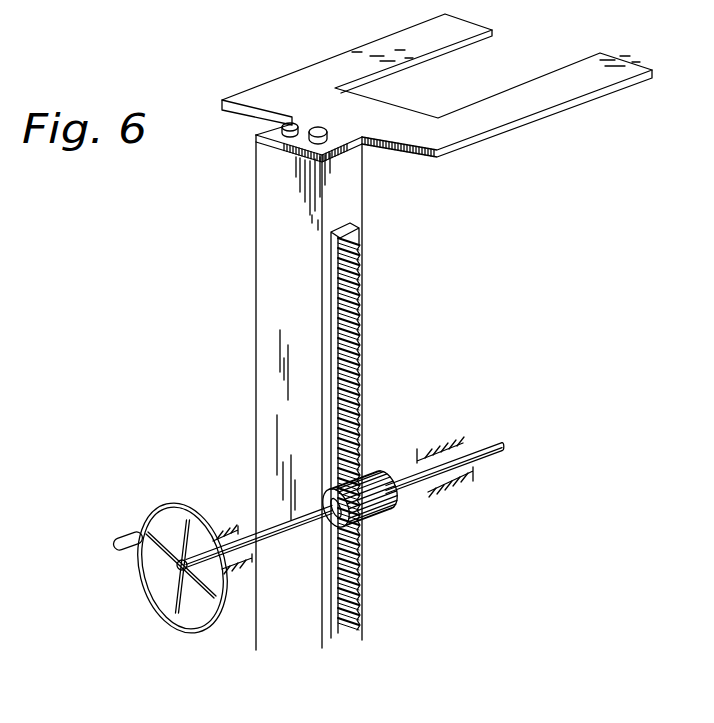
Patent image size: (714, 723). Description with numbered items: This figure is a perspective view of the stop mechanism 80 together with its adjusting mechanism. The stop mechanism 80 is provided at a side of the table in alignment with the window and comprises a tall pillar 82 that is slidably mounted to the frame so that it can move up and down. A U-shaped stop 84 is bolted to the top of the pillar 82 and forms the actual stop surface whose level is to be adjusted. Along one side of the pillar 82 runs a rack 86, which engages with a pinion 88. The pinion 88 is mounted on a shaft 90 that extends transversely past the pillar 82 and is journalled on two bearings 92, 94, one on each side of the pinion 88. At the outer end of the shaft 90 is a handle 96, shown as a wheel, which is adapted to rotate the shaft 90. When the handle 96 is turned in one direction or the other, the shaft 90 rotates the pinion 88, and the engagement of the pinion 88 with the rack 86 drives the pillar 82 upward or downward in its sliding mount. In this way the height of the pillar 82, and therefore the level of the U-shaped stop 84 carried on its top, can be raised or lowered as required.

The stop mechanism 80 is at (222, 222).
The pillar 82 is at (262, 291).
The U-shaped stop 84 is at (540, 107).
The rack 86 is at (362, 327).
The pinion 88 is at (388, 505).
The shaft 90 is at (493, 440).
The bearing 92 is at (230, 528).
The bearing 94 is at (443, 440).
The handle 96 is at (165, 507).